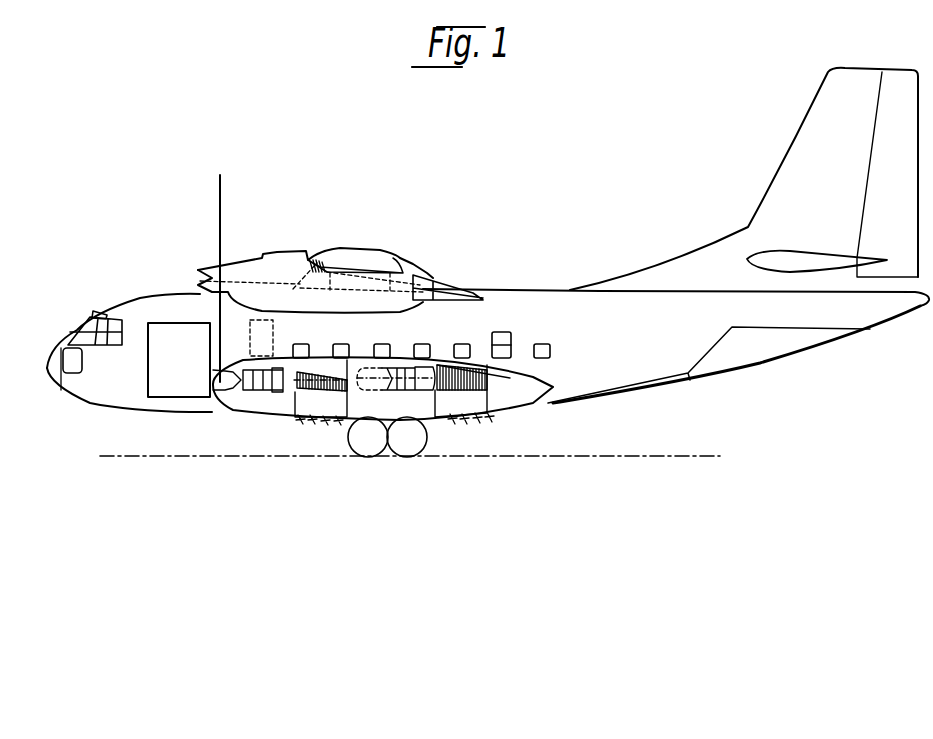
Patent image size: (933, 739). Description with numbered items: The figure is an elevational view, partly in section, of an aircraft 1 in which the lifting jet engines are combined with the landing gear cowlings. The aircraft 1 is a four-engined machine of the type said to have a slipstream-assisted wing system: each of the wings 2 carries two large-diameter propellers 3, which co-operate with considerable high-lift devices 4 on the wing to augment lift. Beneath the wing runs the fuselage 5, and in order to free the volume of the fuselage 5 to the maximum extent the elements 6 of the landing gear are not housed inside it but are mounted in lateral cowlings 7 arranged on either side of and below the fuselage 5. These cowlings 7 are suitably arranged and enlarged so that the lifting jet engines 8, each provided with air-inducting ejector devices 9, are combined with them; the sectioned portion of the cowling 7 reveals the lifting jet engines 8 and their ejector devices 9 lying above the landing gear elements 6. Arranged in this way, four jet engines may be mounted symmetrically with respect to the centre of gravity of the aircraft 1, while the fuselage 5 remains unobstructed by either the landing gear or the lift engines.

The aircraft 1 is at (521, 290).
The wing 2 is at (356, 258).
The propeller 3 is at (220, 232).
The high-lift device 4 is at (437, 279).
The fuselage 5 is at (597, 365).
The landing gear element 6 is at (403, 448).
The lateral cowling 7 is at (520, 392).
The lifting jet engine 8 is at (272, 392).
The air-inducting ejector device 9 is at (315, 377).